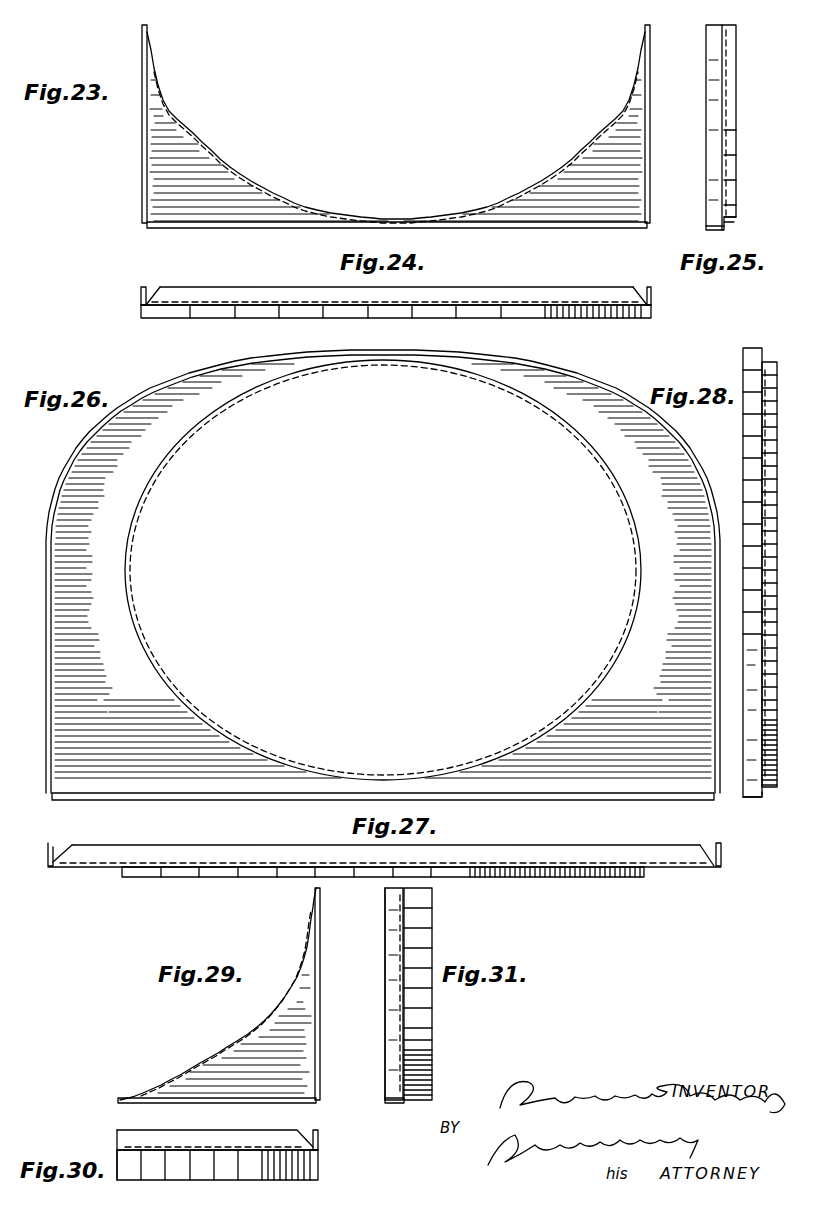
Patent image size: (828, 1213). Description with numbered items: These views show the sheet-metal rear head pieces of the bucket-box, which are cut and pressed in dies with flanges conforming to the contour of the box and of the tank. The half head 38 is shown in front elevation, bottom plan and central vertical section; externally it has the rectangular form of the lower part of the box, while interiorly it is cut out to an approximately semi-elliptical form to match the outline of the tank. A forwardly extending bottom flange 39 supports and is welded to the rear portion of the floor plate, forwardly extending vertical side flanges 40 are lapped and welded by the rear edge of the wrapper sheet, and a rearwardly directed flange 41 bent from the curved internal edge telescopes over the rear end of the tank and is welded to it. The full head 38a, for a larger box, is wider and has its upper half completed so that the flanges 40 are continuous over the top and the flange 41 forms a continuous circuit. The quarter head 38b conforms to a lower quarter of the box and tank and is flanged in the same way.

In FIG. 23, the half head 38 is at (138, 157).
In FIG. 24, the half head 38 is at (188, 319).
In FIG. 25, the half head 38 is at (738, 41).
In FIG. 26, the full head 38a is at (77, 465).
In FIG. 27, the full head 38a is at (121, 878).
In FIG. 28, the full head 38a is at (762, 347).
In FIG. 29, the quarter head 38b is at (295, 950).
In FIG. 30, the quarter head 38b is at (320, 1158).
In FIG. 31, the quarter head 38b is at (435, 917).
In FIG. 23, the bottom flange 39 is at (206, 230).
In FIG. 24, the bottom flange 39 is at (204, 291).
In FIG. 25, the bottom flange 39 is at (706, 230).
In FIG. 26, the bottom flange 39 is at (326, 794).
In FIG. 27, the bottom flange 39 is at (225, 857).
In FIG. 28, the bottom flange 39 is at (744, 800).
In FIG. 29, the bottom flange 39 is at (178, 1100).
In FIG. 30, the bottom flange 39 is at (155, 1142).
In FIG. 31, the bottom flange 39 is at (388, 1100).
In FIG. 23, the side flange 40 is at (654, 182).
In FIG. 24, the side flange 40 is at (141, 292).
In FIG. 25, the side flange 40 is at (712, 155).
In FIG. 26, the side flange 40 is at (56, 530).
In FIG. 27, the side flange 40 is at (57, 857).
In FIG. 28, the side flange 40 is at (743, 446).
In FIG. 29, the side flange 40 is at (320, 1032).
In FIG. 30, the side flange 40 is at (313, 1133).
In FIG. 31, the side flange 40 is at (386, 1020).
In FIG. 23, the rearwardly directed flange 41 is at (233, 178).
In FIG. 24, the rearwardly directed flange 41 is at (536, 319).
In FIG. 25, the rearwardly directed flange 41 is at (738, 226).
In FIG. 26, the rearwardly directed flange 41 is at (630, 484).
In FIG. 27, the rearwardly directed flange 41 is at (613, 878).
In FIG. 28, the rearwardly directed flange 41 is at (773, 791).
In FIG. 29, the rearwardly directed flange 41 is at (232, 1042).
In FIG. 30, the rearwardly directed flange 41 is at (300, 1182).
In FIG. 31, the rearwardly directed flange 41 is at (433, 1053).